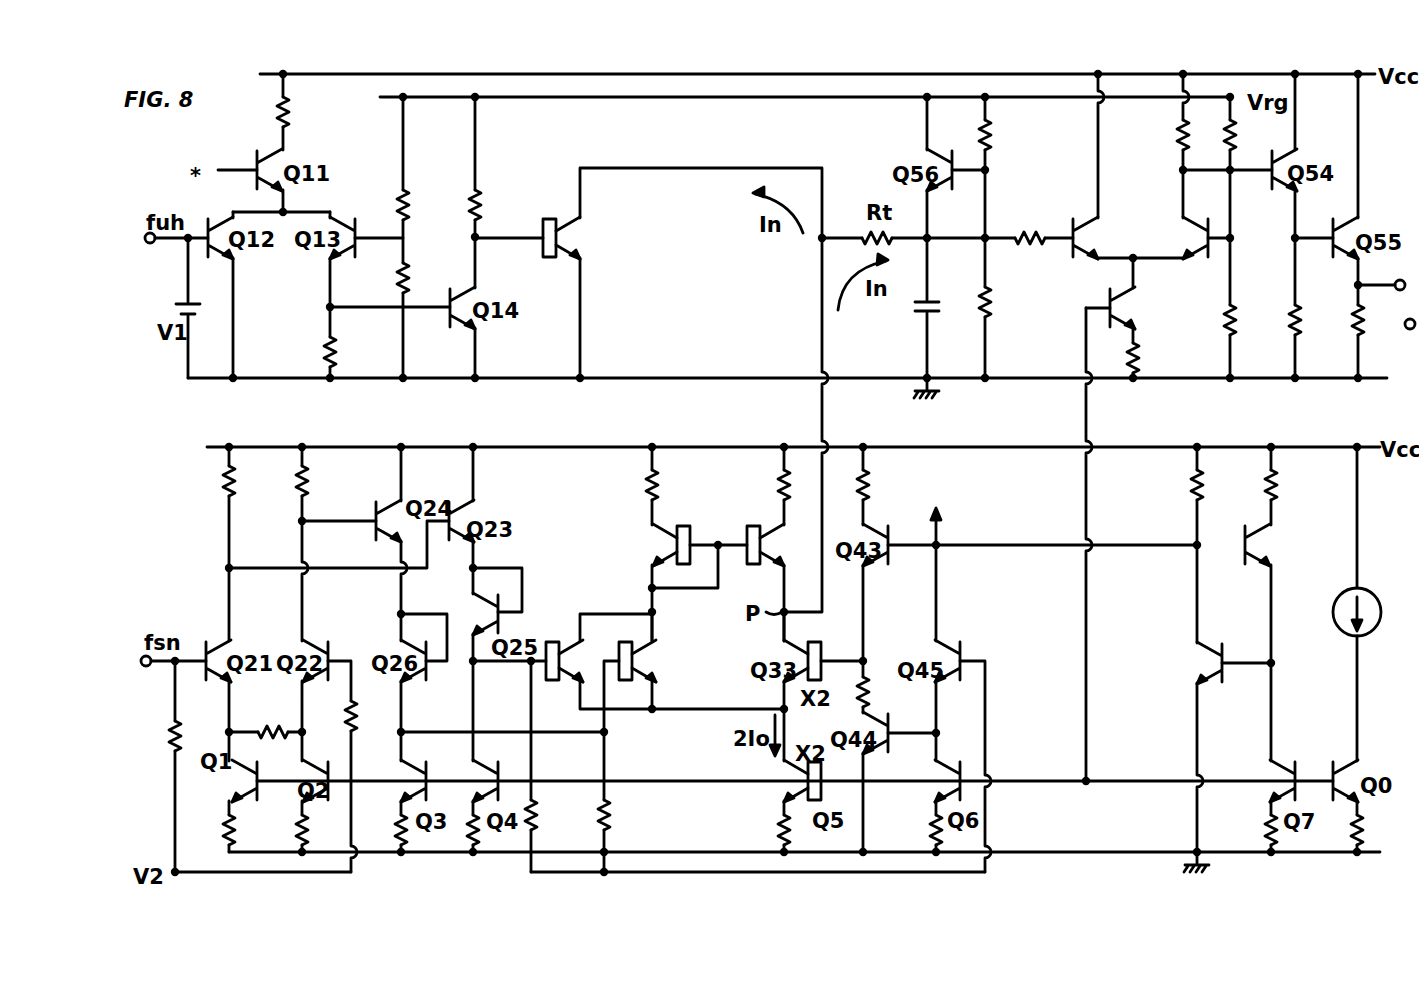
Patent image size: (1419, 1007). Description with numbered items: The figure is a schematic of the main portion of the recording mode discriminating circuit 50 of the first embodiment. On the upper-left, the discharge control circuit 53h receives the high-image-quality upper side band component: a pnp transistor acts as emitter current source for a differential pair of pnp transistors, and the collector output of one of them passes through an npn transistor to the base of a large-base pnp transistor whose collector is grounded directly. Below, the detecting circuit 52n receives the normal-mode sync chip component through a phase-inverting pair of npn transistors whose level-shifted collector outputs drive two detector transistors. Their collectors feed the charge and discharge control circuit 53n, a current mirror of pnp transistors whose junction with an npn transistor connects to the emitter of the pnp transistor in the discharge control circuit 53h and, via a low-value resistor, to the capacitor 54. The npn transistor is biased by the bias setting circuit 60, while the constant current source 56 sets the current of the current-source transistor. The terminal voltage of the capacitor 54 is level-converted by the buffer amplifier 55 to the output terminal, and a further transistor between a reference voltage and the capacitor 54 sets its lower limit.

The recording mode discriminating circuit 50 is at (1400, 291).
The detecting circuit 52n is at (595, 606).
The discharge control circuit 53h is at (553, 168).
The charge and discharge control circuit 53n is at (743, 498).
The capacitor 54 is at (918, 312).
The buffer amplifier 55 is at (1052, 312).
The constant current source 56 is at (1377, 602).
The bias setting circuit 60 is at (1037, 615).